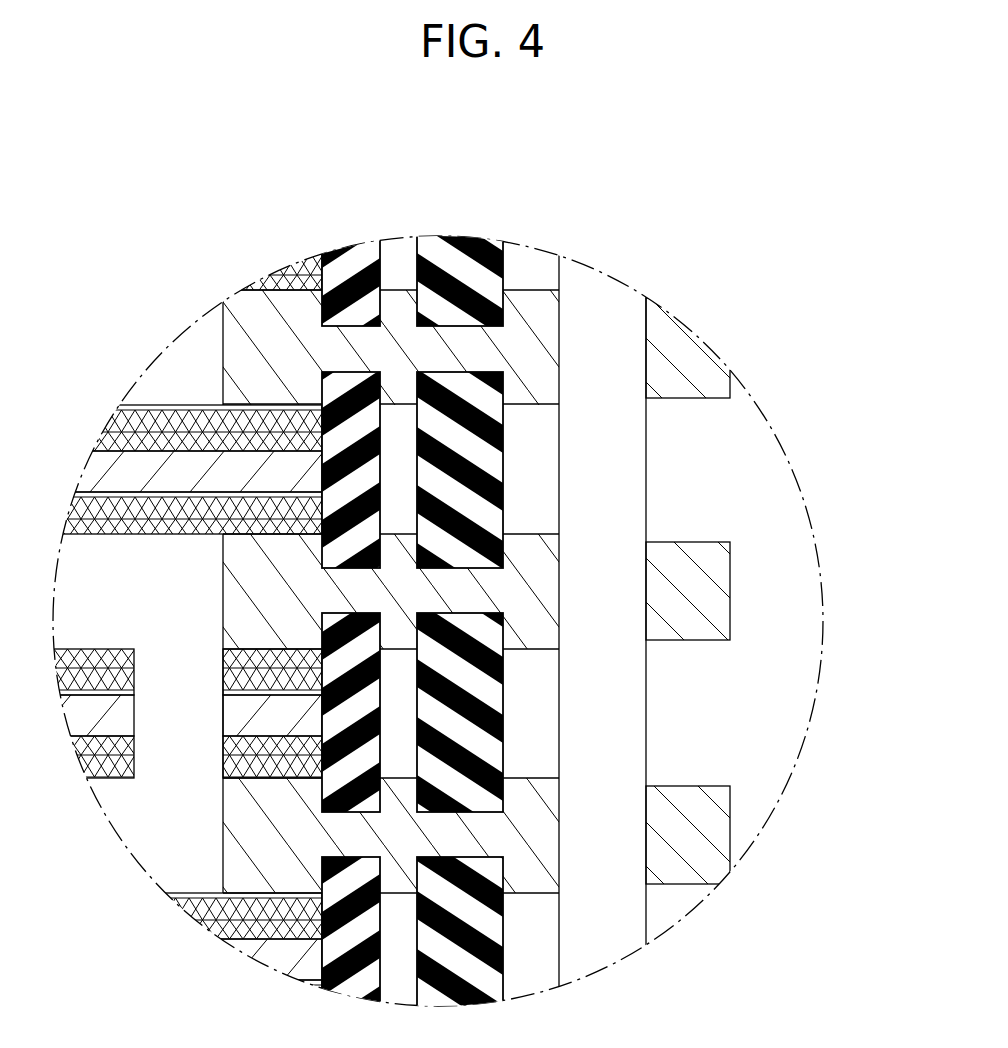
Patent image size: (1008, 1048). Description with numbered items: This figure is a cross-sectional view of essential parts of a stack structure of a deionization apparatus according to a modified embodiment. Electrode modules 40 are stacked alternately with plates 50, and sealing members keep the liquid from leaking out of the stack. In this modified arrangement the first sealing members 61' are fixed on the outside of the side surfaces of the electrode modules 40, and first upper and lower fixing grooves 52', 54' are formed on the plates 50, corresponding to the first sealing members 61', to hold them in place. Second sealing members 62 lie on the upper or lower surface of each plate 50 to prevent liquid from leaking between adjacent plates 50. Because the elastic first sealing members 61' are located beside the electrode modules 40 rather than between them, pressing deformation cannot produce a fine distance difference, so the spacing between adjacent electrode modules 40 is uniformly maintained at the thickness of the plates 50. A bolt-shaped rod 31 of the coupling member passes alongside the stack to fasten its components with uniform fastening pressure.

The electrode module 40 is at (146, 420).
The first sealing member 61' is at (362, 605).
The second sealing member 62 is at (495, 472).
The first upper fixing groove 52' is at (335, 591).
The first lower fixing groove 54' is at (177, 704).
The plate 50 is at (720, 598).
The bolt-shaped rod 31 is at (640, 717).